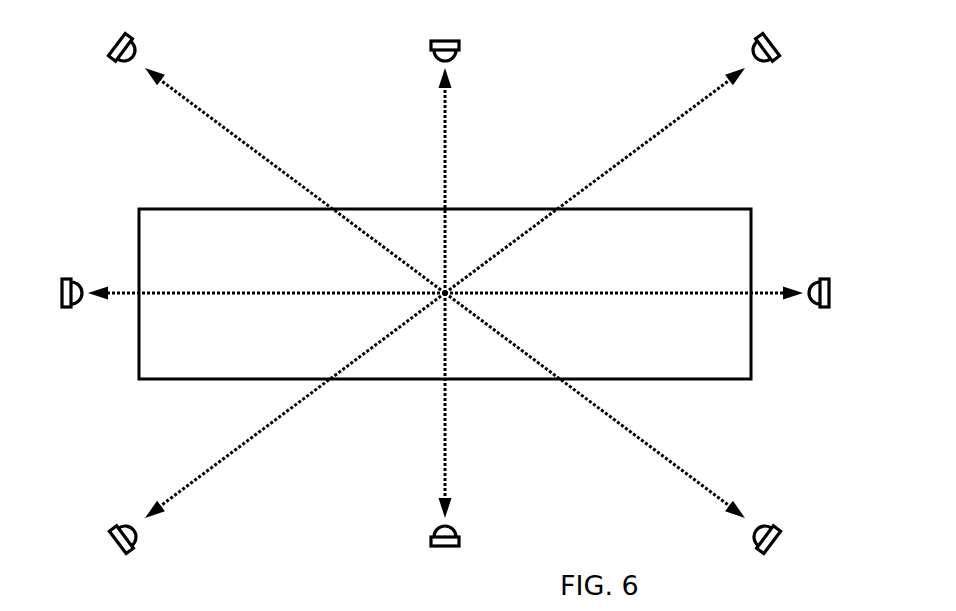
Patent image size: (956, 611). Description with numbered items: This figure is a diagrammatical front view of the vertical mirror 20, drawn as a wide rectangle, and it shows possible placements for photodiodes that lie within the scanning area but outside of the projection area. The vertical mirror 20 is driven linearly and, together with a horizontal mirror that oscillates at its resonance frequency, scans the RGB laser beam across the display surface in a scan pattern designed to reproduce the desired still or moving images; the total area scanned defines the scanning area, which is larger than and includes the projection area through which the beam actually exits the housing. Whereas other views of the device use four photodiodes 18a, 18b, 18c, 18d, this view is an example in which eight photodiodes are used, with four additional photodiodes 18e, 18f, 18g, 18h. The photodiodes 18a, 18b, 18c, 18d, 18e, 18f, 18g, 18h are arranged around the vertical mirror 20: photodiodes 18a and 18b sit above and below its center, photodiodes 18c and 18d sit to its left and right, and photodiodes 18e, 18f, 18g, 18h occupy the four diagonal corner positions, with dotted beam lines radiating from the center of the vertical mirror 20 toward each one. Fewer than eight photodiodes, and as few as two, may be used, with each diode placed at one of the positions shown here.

The vertical mirror 20 is at (172, 372).
The photodiode 18a is at (438, 40).
The photodiode 18b is at (438, 548).
The photodiode 18c is at (60, 302).
The photodiode 18d is at (830, 305).
The photodiode 18e is at (775, 45).
The photodiode 18f is at (775, 543).
The photodiode 18g is at (115, 47).
The photodiode 18h is at (117, 548).